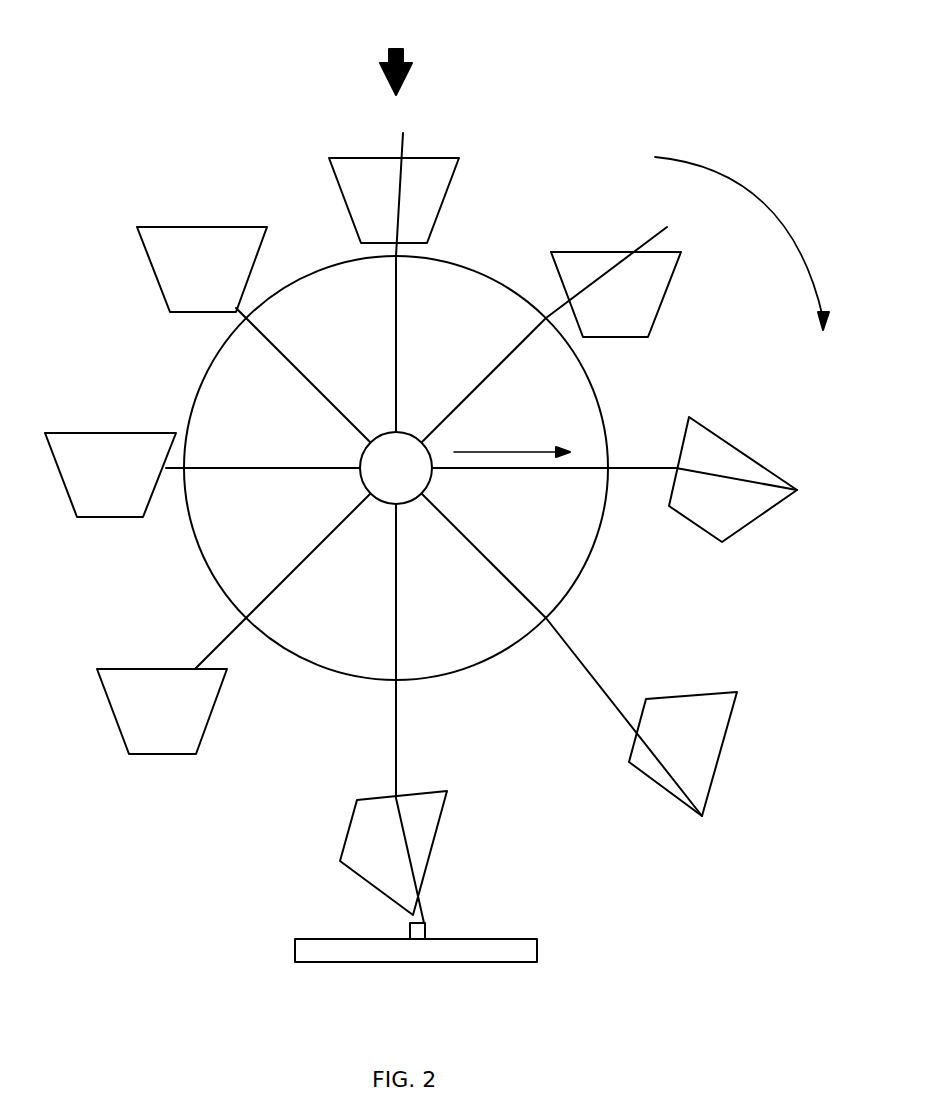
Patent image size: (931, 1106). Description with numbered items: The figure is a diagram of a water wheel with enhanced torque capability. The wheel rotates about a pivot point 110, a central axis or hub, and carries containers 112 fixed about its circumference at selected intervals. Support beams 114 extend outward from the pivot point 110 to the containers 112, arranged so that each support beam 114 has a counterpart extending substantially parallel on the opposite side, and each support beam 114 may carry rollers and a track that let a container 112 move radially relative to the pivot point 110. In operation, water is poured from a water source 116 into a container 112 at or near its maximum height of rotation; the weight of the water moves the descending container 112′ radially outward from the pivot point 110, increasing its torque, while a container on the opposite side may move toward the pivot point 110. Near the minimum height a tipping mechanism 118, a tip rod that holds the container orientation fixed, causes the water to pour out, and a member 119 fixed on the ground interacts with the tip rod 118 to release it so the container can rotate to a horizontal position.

The pivot point 110 is at (387, 450).
The container 112 is at (347, 168).
The container 112′ is at (577, 263).
The support beam 114 is at (472, 542).
The water source 116 is at (400, 43).
The tipping mechanism 118 is at (678, 773).
The member 119 is at (425, 925).